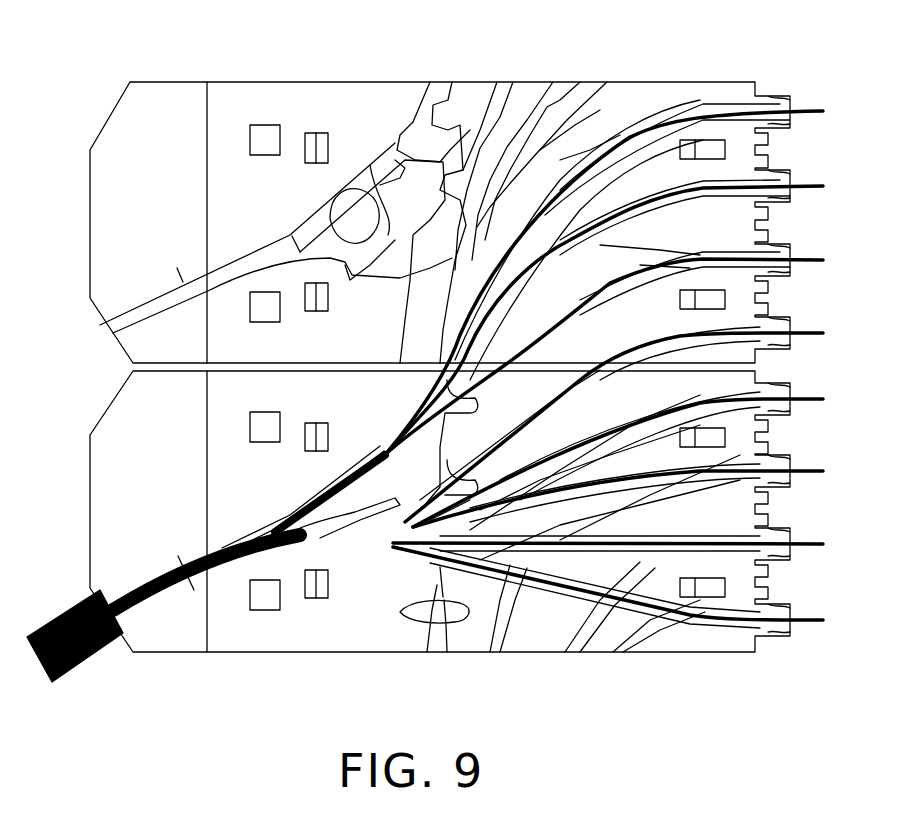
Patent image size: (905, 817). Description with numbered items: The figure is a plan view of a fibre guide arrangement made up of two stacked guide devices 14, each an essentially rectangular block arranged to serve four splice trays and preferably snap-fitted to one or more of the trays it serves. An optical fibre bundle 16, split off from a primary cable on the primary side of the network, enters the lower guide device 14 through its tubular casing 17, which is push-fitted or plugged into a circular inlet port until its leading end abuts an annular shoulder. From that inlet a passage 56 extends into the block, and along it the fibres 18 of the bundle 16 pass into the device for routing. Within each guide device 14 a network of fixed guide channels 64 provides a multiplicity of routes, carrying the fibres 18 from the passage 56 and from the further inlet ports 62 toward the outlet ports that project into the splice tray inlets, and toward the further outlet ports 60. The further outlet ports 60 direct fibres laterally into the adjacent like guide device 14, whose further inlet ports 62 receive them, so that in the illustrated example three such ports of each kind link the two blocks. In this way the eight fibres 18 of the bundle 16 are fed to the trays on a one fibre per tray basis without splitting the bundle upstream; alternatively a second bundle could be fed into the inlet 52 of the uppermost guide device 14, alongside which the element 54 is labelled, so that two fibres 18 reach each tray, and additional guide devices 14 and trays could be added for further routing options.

The guide device 14 is at (116, 110).
The optical fibre bundle 16 is at (104, 658).
The tubular casing 17 is at (44, 625).
The fibres 18 is at (822, 470).
The inlet 52 is at (142, 292).
The guide wall 54 is at (265, 240).
The passage 56 is at (782, 95).
The further outlet ports 60 is at (452, 82).
The further inlet ports 62 is at (438, 652).
The fixed guide channels 64 is at (358, 185).